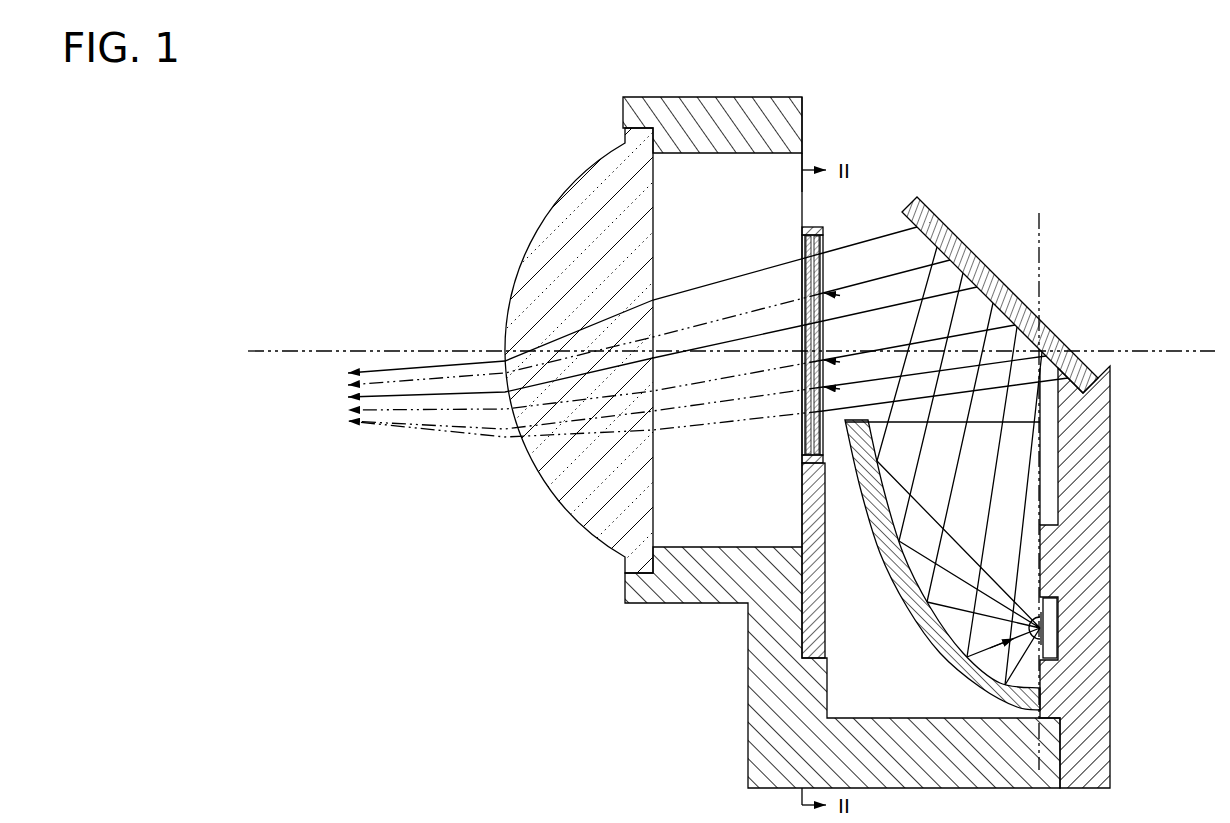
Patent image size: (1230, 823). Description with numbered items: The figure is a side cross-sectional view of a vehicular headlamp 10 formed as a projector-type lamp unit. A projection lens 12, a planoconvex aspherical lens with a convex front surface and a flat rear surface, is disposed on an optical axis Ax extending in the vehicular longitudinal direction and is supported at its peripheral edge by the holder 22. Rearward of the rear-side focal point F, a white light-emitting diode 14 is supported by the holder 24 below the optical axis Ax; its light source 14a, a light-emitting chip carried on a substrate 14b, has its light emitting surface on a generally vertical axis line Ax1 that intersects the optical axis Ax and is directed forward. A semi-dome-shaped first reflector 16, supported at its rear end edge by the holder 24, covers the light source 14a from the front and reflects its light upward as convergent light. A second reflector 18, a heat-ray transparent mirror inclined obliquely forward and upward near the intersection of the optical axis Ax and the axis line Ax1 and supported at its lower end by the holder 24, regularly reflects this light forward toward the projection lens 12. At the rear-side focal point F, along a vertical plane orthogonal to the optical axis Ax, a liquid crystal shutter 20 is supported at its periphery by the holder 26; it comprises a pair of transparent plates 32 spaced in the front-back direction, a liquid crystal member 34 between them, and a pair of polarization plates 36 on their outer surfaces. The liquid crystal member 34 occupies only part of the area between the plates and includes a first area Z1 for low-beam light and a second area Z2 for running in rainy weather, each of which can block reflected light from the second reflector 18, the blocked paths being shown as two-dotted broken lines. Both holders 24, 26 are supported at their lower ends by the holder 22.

The vehicular headlamp 10 is at (452, 148).
The projection lens 12 is at (522, 248).
The white light-emitting diode 14 is at (1039, 645).
The light source 14a is at (1052, 636).
The substrate 14b is at (1056, 645).
The first reflector 16 is at (897, 615).
The second reflector 18 is at (972, 246).
The liquid crystal shutter 20 is at (800, 262).
The holder 22 is at (760, 707).
The holder 24 is at (1110, 530).
The holder 26 is at (800, 505).
The transparent plates 32 is at (800, 232).
The liquid crystal member 34 is at (828, 303).
The polarization plates 36 is at (805, 316).
The rear-side focal point F is at (826, 360).
The first area Z1 is at (800, 436).
The second area Z2 is at (796, 318).
The optical axis Ax is at (318, 350).
The axis line Ax1 is at (1036, 266).